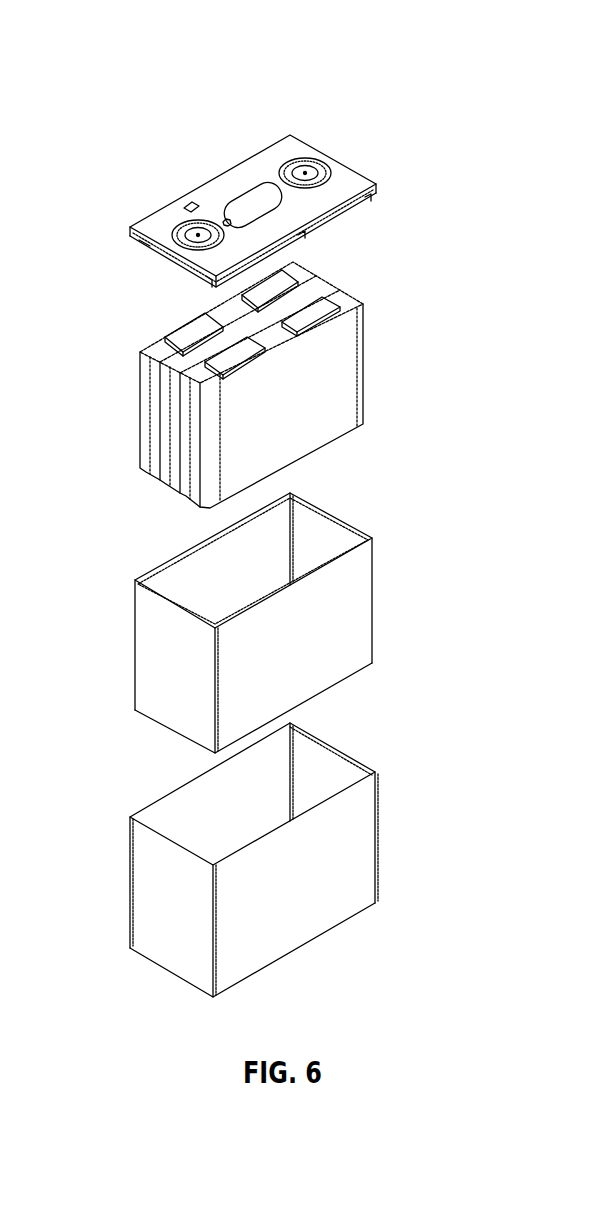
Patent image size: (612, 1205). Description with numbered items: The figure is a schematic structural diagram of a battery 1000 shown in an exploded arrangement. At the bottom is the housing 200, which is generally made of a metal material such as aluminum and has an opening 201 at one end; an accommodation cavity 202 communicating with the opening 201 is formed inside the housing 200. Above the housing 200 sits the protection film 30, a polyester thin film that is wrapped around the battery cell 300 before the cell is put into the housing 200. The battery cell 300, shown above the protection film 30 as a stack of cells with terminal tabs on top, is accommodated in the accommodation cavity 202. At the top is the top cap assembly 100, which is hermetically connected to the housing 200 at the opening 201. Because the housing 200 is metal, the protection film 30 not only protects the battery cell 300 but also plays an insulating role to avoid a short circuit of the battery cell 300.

The battery 1000 is at (307, 54).
The top cap assembly 100 is at (343, 195).
The battery cell 300 is at (335, 392).
The protection film 30 is at (347, 610).
The housing 200 is at (282, 848).
The opening 201 is at (170, 805).
The accommodation cavity 202 is at (273, 776).